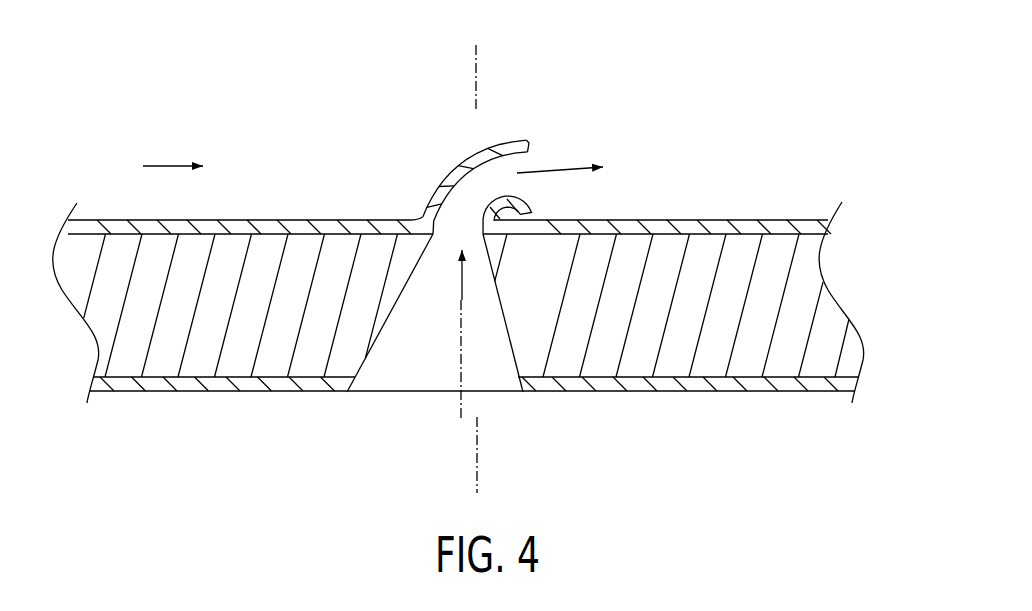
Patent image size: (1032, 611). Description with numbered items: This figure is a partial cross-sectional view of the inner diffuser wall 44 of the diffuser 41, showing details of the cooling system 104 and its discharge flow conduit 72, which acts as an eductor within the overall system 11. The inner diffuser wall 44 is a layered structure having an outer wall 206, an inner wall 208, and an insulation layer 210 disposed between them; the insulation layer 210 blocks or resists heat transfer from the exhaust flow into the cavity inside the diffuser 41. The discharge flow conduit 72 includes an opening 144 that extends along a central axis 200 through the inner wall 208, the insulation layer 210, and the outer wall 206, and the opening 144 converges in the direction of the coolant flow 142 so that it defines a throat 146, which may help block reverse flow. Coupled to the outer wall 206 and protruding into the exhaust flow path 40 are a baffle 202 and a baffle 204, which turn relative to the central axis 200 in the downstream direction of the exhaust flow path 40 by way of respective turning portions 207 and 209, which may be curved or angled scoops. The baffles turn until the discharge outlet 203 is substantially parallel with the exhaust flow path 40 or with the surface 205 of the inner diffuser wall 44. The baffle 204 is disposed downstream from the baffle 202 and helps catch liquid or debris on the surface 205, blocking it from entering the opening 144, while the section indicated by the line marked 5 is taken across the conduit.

The cooling system 104 is at (687, 54).
The gas turbine engine 11 is at (794, 80).
The diffuser 41 is at (811, 127).
The exhaust flow path 40 is at (168, 165).
The inner diffuser wall 44 is at (125, 211).
The discharge flow conduit 72 is at (407, 148).
The throat 146 is at (473, 203).
The section line 5- 5 is at (473, 68).
The surface 205 is at (295, 223).
The outer wall 206 is at (778, 228).
The turning portion 207 is at (448, 168).
The baffle 202 is at (520, 140).
The baffle 204 is at (531, 195).
The discharge outlet 203 is at (523, 182).
The coolant flow 142 is at (552, 170).
The insulation layer 210 is at (803, 283).
The opening 144 is at (390, 313).
The turning portion 209 is at (513, 353).
The inner wall 208 is at (752, 383).
The central axis 200 is at (460, 403).